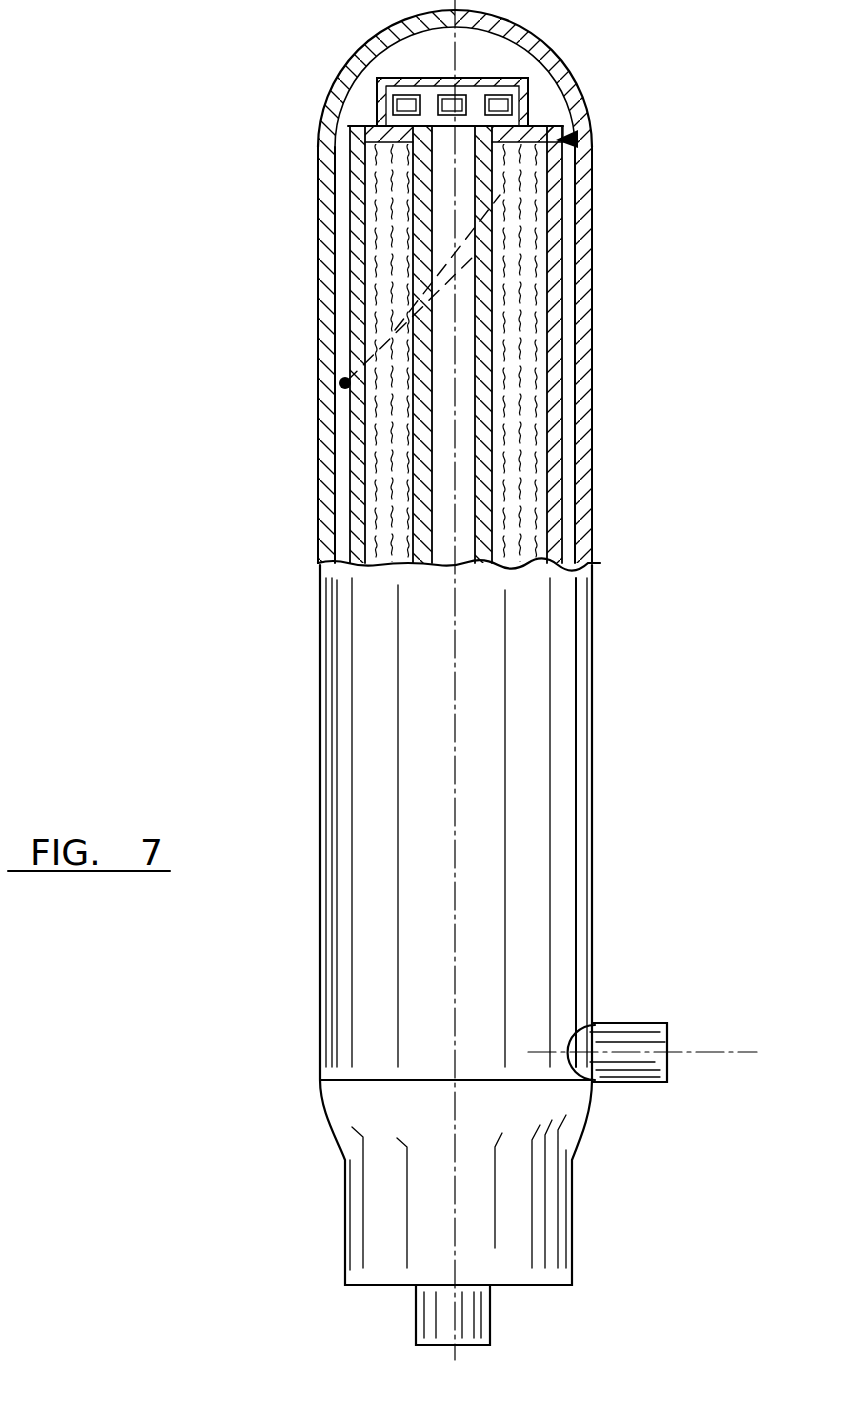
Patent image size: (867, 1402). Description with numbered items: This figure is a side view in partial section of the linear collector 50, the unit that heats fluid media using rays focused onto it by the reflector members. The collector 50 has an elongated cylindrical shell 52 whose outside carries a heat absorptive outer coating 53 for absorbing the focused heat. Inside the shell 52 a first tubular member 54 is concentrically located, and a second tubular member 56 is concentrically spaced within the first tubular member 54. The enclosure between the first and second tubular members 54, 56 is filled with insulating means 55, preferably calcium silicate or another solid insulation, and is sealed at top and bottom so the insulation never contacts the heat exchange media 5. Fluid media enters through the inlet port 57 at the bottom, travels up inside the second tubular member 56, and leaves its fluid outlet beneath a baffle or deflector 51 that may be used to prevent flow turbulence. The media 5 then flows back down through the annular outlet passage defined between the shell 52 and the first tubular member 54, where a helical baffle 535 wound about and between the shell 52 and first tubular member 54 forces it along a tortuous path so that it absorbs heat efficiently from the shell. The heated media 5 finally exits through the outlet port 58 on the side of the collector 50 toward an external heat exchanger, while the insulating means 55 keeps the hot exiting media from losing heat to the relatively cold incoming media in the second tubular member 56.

The heat exchange media 5 is at (470, 46).
The linear collector 50 is at (602, 636).
The baffle or deflector 51 is at (532, 100).
The elongated cylindrical shell 52 is at (590, 385).
The heat absorptive outer coating 53 is at (318, 484).
The helical baffle 535 is at (578, 138).
The first tubular member 54 is at (556, 260).
The insulating means 55 is at (530, 318).
The second tubular member 56 is at (482, 260).
The inlet port 57 is at (495, 1336).
The outlet port 58 is at (670, 1040).